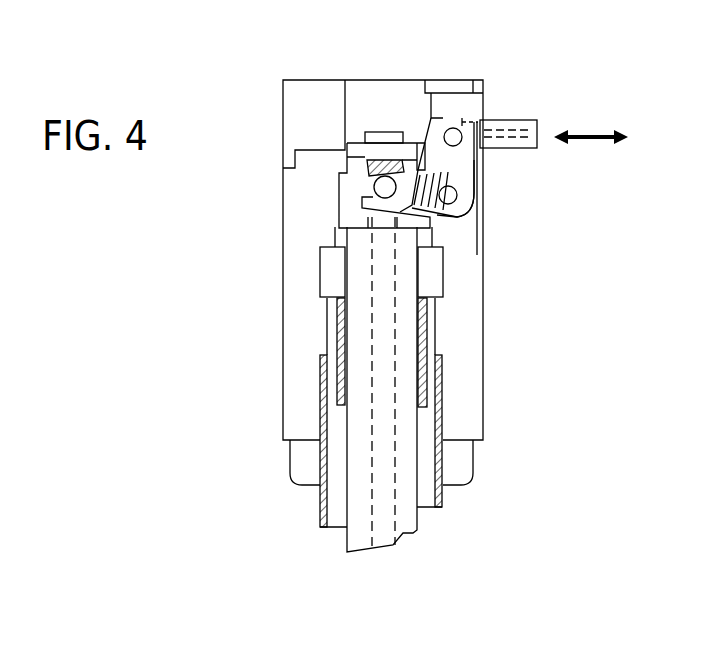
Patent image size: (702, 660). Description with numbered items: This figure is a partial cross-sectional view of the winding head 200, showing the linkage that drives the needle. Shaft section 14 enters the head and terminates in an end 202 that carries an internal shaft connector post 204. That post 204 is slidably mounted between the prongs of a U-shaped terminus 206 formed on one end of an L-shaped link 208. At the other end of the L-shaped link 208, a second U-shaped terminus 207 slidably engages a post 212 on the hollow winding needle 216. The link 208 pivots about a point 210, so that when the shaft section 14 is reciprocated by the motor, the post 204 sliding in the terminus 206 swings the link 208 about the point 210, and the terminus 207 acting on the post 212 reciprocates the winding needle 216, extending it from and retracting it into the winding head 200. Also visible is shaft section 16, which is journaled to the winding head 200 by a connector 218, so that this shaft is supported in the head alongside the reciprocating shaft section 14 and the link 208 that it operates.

The shaft section 14 is at (408, 518).
The shaft section 16 is at (443, 380).
The winding head 200 is at (226, 325).
The end 202 is at (349, 187).
The internal shaft connector post 204 is at (382, 175).
The U-shaped terminus 206 is at (413, 197).
The second U-shaped terminus 207 is at (466, 131).
The L-shaped link 208 is at (458, 172).
The pivot point 210 is at (453, 198).
The post 212 is at (455, 128).
The hollow winding needle 216 is at (505, 143).
The connector 218 is at (445, 278).